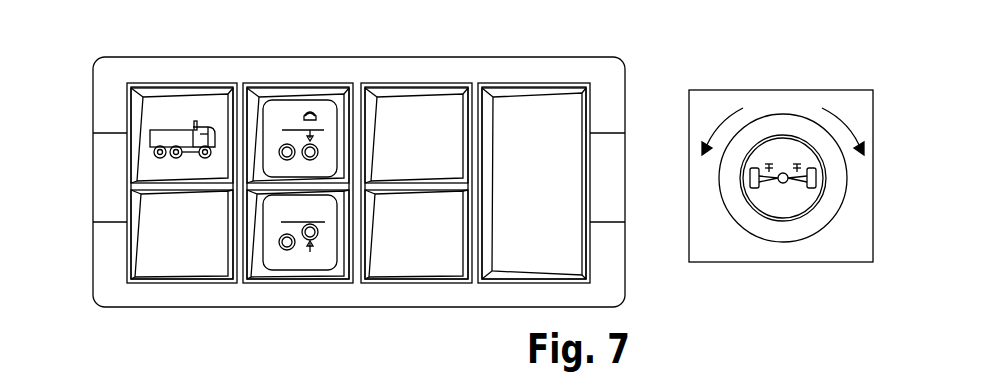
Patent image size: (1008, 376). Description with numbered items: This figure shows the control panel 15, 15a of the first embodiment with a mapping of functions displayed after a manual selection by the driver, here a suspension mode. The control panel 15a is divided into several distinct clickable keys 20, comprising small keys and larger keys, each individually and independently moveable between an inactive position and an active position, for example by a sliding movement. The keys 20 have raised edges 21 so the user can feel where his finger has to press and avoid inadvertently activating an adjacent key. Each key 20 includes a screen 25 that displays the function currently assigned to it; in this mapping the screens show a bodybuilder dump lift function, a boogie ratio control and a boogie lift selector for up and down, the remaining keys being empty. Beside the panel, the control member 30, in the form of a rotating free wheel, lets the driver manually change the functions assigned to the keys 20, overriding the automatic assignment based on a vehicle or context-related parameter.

The control panel 15 is at (404, 160).
The control panel 15a is at (642, 73).
The clickable key 20 is at (563, 247).
The raised edges 21 is at (140, 211).
The screen 25 is at (283, 110).
The control member 30 is at (787, 233).